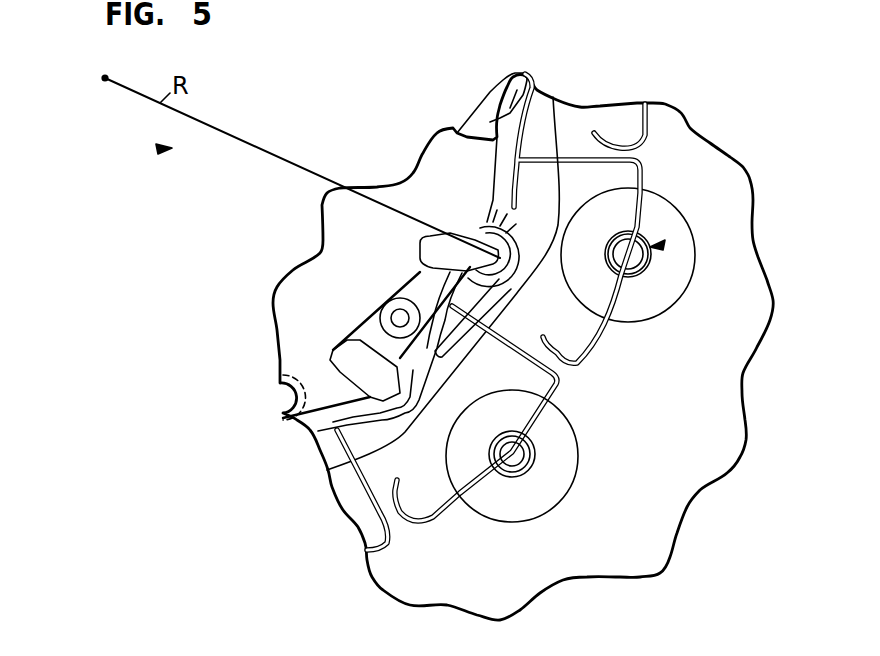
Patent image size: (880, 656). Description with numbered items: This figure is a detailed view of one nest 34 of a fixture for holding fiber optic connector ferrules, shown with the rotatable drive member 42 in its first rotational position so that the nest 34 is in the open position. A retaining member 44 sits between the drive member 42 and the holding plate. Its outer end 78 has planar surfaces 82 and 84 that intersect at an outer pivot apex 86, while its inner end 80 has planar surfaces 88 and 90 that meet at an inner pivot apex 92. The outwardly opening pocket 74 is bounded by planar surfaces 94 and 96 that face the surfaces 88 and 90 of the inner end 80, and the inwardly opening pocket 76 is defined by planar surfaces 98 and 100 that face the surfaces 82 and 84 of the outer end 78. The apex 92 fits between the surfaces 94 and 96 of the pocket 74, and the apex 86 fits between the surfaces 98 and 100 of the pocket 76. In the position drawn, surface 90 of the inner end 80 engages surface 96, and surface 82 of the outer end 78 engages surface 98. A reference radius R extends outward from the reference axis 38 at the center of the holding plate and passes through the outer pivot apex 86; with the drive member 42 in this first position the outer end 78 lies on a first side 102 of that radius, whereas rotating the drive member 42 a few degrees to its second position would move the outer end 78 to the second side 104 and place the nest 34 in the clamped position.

The second side of the reference radius 104 is at (133, 82).
The reference axis 38 is at (103, 80).
The first side of the reference radius 102 is at (160, 150).
The rotatable drive member 42 is at (403, 178).
The nest 34 is at (662, 244).
The planar surface of the inner end 88 is at (497, 240).
The planar surface of the outwardly opening pocket 94 is at (497, 243).
The outwardly opening pocket 74 is at (493, 248).
The inner pivot apex 92 is at (500, 253).
The planar surface of the inner end 90 is at (493, 260).
The inner end of the retaining member 80 is at (488, 262).
The planar surface of the outwardly opening pocket 96 is at (488, 266).
The planar surface of the outer end 82 is at (495, 258).
The planar surface of the inwardly opening pocket 98 is at (427, 242).
The outer end of the retaining member 78 is at (422, 246).
The outer pivot apex 86 is at (420, 250).
The planar surface of the inwardly opening pocket 100 is at (420, 263).
The inwardly opening pocket 76 is at (420, 263).
The planar surface of the outer end 84 is at (420, 263).
The retaining member 44 is at (408, 290).